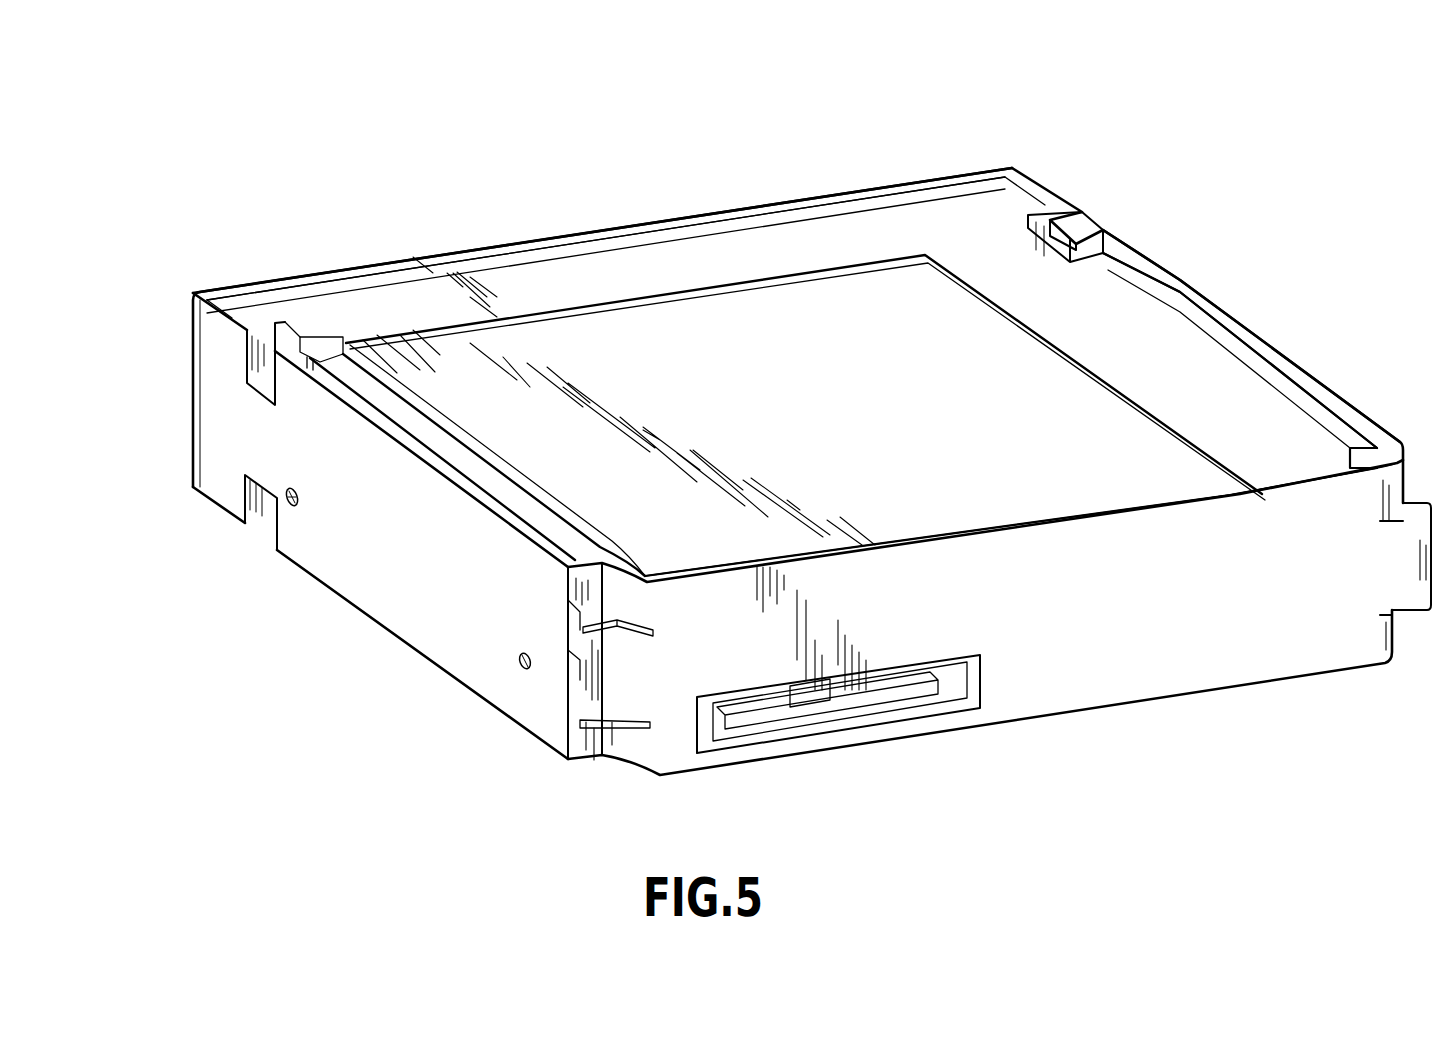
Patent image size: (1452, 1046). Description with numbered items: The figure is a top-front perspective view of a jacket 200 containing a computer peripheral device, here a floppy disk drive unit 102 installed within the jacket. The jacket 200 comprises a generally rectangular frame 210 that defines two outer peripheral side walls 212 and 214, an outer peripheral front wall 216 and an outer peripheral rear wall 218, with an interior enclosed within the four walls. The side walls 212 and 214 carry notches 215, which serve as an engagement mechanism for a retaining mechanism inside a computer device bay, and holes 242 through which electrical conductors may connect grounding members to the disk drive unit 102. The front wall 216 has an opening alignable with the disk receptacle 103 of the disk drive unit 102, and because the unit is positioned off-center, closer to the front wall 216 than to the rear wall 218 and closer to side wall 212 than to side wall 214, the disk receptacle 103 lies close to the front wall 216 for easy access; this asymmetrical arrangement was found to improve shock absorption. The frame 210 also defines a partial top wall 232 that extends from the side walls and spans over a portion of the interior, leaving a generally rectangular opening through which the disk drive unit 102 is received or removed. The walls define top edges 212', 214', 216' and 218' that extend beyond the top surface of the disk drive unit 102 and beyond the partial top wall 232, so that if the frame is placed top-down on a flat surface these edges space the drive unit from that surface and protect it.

The jacket 200 is at (301, 151).
The frame 210 is at (1013, 166).
The outer peripheral rear wall 218 is at (602, 212).
The top edge of rear wall 218' is at (606, 220).
The outer peripheral side wall 214 is at (1251, 336).
The top edge of side wall 214' is at (1246, 350).
The partial top wall 232 is at (1162, 348).
The disk drive unit 102 is at (947, 416).
The outer peripheral side wall 212 is at (380, 526).
The top edge of side wall 212' is at (465, 449).
The outer peripheral front wall 216 is at (1002, 617).
The top edge of front wall 216' is at (1011, 526).
The notches 215 is at (1085, 224).
The holes 242 is at (293, 510).
The disk receptacle 103 is at (916, 690).